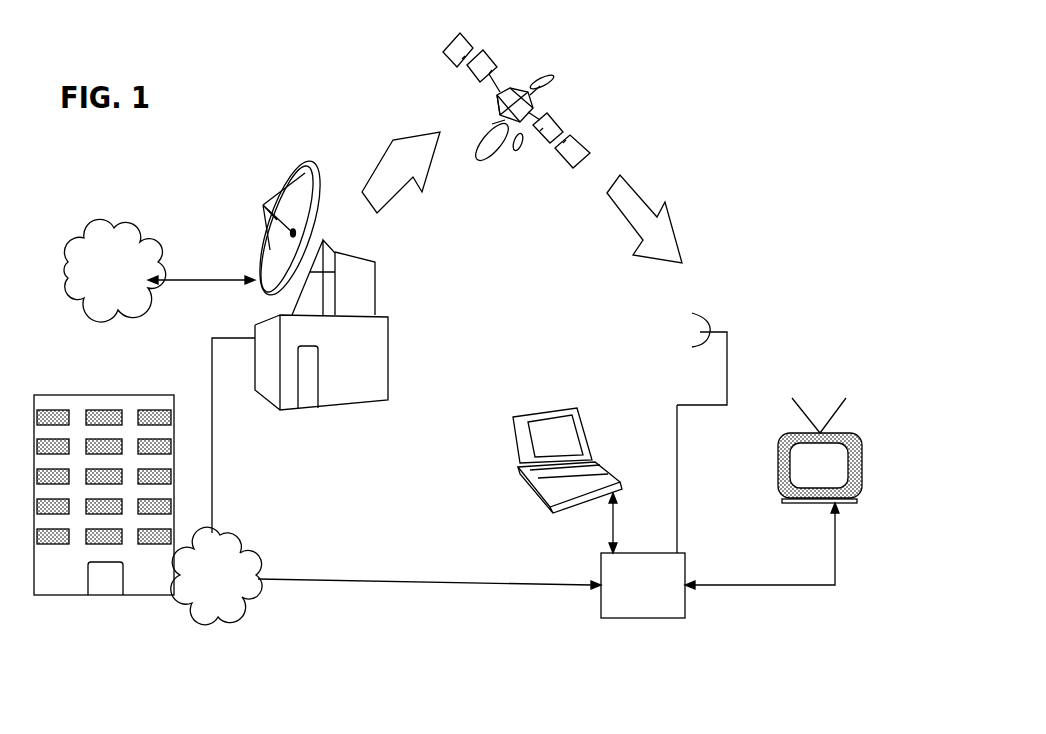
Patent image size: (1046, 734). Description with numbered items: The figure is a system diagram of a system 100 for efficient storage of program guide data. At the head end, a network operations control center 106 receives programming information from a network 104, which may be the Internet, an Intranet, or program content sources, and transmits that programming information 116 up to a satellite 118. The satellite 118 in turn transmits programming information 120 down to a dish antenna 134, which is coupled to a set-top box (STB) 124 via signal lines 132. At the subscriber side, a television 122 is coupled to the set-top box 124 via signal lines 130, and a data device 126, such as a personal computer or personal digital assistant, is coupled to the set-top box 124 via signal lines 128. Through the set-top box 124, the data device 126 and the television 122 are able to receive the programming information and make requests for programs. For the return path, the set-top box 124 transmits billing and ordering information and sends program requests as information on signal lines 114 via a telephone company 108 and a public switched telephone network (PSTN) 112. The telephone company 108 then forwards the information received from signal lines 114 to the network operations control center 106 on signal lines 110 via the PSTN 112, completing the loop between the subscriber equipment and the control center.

The system 100 is at (810, 651).
The network 104 is at (159, 251).
The network operations control center 106 is at (309, 166).
The telephone company 108 is at (100, 396).
The signal lines 110 is at (213, 442).
The public switched telephone network (PSTN) 112 is at (255, 563).
The signal lines 114 is at (445, 583).
The programming information 116 is at (401, 132).
The satellite 118 is at (515, 72).
The programming information 120 is at (635, 187).
The television 122 is at (846, 433).
The set-top box (STB) 124 is at (685, 567).
The data device 126 is at (577, 408).
The signal lines 128 is at (611, 520).
The signal lines 130 is at (835, 560).
The signal lines 132 is at (677, 443).
The dish antenna 134 is at (713, 314).